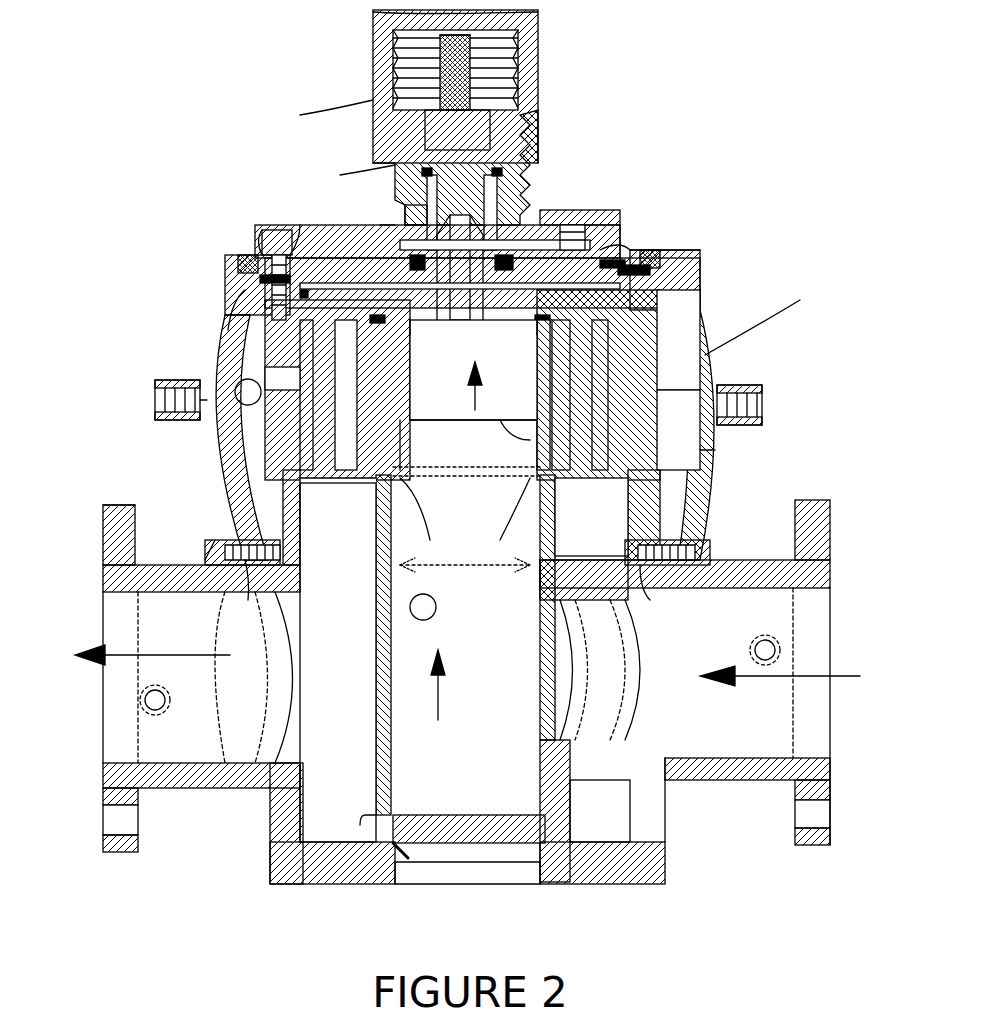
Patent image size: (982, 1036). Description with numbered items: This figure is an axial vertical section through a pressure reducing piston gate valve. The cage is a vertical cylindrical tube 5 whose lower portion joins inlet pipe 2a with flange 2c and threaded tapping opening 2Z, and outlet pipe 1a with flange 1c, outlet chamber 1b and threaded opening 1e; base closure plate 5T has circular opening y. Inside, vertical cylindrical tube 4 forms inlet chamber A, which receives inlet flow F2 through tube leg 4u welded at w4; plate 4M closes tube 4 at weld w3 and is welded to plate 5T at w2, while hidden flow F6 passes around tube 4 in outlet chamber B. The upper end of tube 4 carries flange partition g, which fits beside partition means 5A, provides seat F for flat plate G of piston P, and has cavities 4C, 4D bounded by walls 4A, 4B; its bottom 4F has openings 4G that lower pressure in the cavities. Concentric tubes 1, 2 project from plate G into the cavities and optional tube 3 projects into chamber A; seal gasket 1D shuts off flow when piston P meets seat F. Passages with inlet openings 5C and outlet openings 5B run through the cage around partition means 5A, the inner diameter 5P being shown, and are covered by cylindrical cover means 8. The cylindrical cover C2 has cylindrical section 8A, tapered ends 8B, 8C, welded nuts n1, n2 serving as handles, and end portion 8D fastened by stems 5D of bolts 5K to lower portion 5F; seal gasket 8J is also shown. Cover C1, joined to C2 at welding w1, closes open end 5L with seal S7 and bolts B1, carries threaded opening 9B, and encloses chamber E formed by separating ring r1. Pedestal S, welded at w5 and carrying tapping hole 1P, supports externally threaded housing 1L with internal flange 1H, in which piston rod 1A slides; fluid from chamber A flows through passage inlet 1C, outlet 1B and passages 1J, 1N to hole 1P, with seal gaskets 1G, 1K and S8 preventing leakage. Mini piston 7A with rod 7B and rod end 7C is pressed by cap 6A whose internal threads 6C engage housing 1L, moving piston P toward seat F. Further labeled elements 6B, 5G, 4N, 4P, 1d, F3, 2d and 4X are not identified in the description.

The rod of mini piston 7B is at (458, 38).
The mini piston 7A is at (520, 100).
The rod end of mini piston 7C is at (500, 12).
The cap 6A is at (440, 40).
The internal threads of cap 6C is at (440, 70).
The screw shoulder 6B is at (425, 108).
The piston rod 1A is at (520, 140).
The passage outlet 1B is at (497, 185).
The seal gasket 1G is at (425, 170).
The tubular fluid passage inlet 1C is at (463, 285).
The internal flange of housing 1H is at (373, 110).
The externally threaded cylindrical housing 1L is at (395, 175).
The seal gasket 1K is at (405, 210).
The pedestal S is at (392, 225).
The concentric tube 1 is at (439, 347).
The tubular passage 1N is at (545, 240).
The tubular passage 1J is at (572, 225).
The threaded access hole 1P is at (615, 240).
The outlet chamber B is at (600, 255).
The separating ring r1 is at (308, 290).
The seal S7 is at (680, 275).
The seal gasket S8 is at (640, 252).
The welding of pedestal w5 is at (605, 252).
The open end of tube 5L is at (680, 312).
The cylindrical cover C2 is at (750, 355).
The welding of cover portions w1 is at (232, 258).
The threaded opening in cover 9B is at (278, 230).
The top cover section C1 is at (295, 250).
The bolts B1 is at (262, 240).
The seal 5G is at (262, 280).
The cylindrical section of cover 8A is at (225, 370).
The tapered end portion 8C is at (226, 330).
The nut n1 is at (170, 392).
The tapered end portion 8B is at (155, 400).
The nut n2 is at (762, 398).
The inner diameter of tube 5P is at (295, 460).
The concentric tube 2 is at (463, 395).
The flange partition g is at (464, 414).
The chamber E is at (650, 342).
The inlet openings 5C is at (645, 383).
The cylindrical cover means 8 is at (715, 452).
The seal gasket 1D is at (473, 370).
The piston P is at (423, 337).
The flat plate of piston G is at (509, 351).
The seat F is at (463, 389).
The circular tube 3 is at (403, 445).
The cylindrical cavity 4D is at (500, 455).
The cylindrical cavity 4C is at (505, 435).
The openings 4G is at (425, 508).
The bottom of flange 4F is at (501, 508).
The cylindrical wall 4B is at (398, 570).
The vertical cylindrical tube 4 is at (540, 540).
The cylindrical wall 4A is at (310, 480).
The outlet openings 5B is at (300, 500).
The channel 4N is at (380, 590).
The piston plate 4P is at (436, 760).
The closing plate 4M is at (418, 815).
The weld w3 is at (372, 815).
The circular opening y is at (440, 862).
The welding w2 is at (450, 862).
The vertical cylindrical tube 5 is at (270, 820).
The base closure plate 5T is at (380, 884).
The partition means 5A is at (628, 480).
The lower portion of tube 5F is at (538, 572).
The tube leg 4u is at (597, 670).
The hidden flow F6 is at (448, 650).
The inlet chamber A is at (423, 607).
The outlet pipe 1a is at (140, 580).
The flange 1c is at (103, 510).
The outlet chamber 1b is at (130, 680).
The lower flange 1d is at (125, 820).
The threaded opening 1e is at (160, 705).
The flow arrow F3 is at (130, 660).
The seal gasket 8J is at (250, 565).
The end portion of cover 8D is at (222, 545).
The bolts 5K is at (210, 545).
The bolt stems 5D is at (248, 600).
The inlet pipe 2a is at (710, 758).
The threaded tapping opening 2Z is at (770, 648).
The flange 2d is at (830, 815).
The flange 2c is at (830, 845).
The inlet flow F2 is at (797, 676).
The welding w4 is at (668, 790).
The space 4X is at (704, 827).